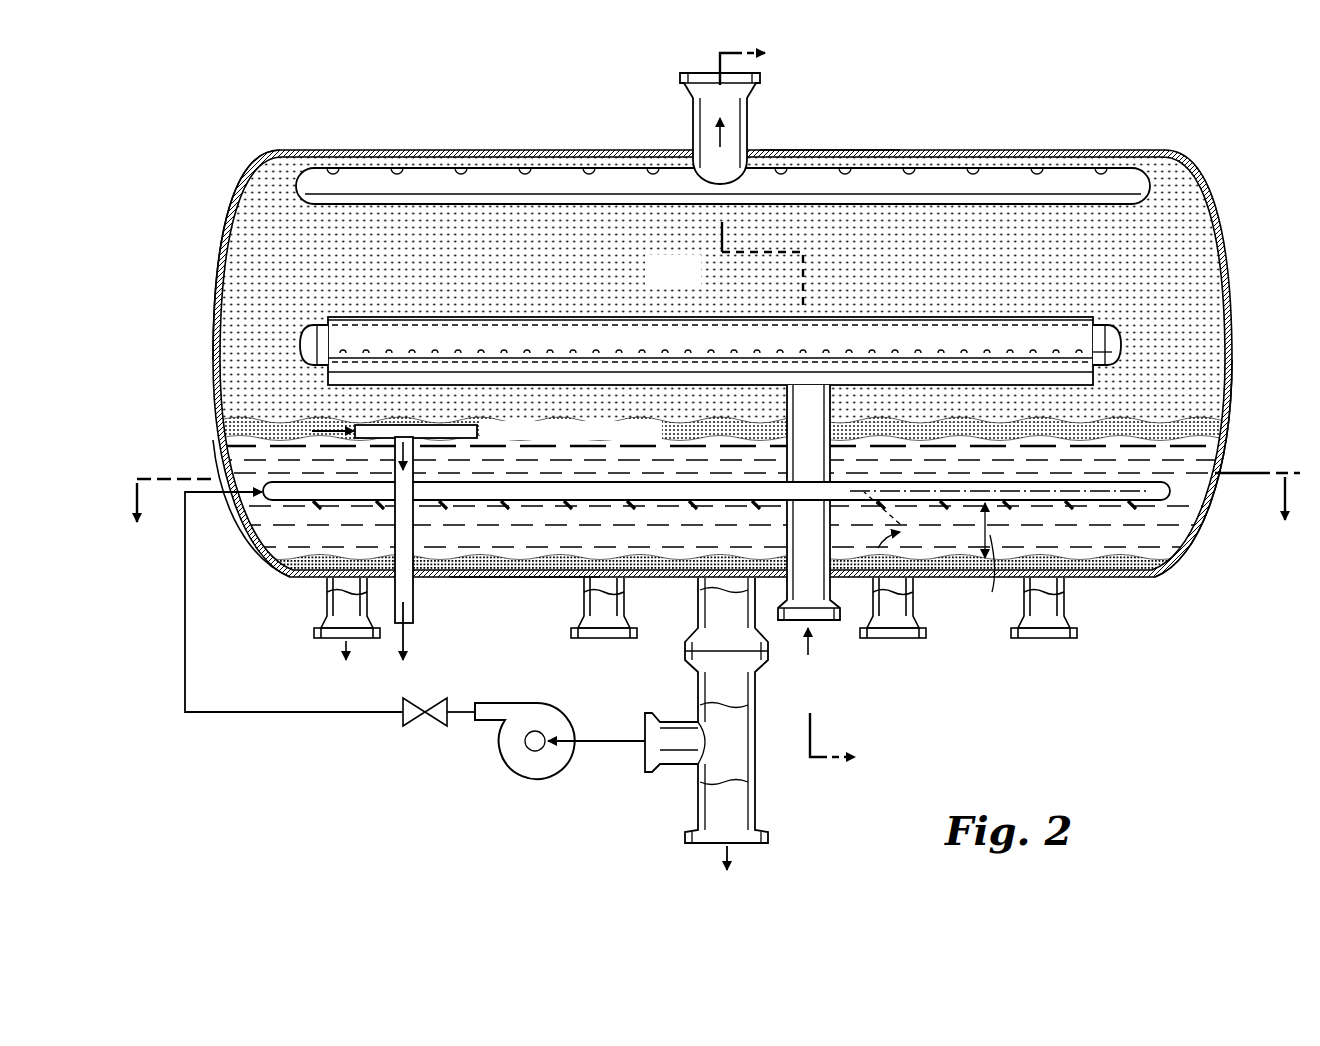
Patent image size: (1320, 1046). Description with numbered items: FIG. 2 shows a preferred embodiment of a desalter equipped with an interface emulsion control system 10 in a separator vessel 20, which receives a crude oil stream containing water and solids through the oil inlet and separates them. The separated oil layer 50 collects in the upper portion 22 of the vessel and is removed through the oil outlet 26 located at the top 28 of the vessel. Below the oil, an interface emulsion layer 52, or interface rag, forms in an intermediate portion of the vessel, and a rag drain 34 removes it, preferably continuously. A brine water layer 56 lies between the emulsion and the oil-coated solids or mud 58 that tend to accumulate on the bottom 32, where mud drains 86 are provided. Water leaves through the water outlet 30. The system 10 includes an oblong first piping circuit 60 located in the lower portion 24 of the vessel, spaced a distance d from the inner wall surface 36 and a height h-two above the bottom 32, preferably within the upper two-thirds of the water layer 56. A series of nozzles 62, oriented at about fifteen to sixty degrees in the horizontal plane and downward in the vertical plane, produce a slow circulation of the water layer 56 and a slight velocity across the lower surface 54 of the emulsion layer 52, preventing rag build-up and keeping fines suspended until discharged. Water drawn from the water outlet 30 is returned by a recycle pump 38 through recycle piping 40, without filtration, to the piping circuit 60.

The interface emulsion control system 10 is at (706, 467).
The separator vessel 20 is at (402, 142).
The upper portion of vessel 22 is at (238, 202).
The lower portion of vessel 24 is at (1207, 513).
The oil outlet 26 is at (693, 112).
The top of vessel 28 is at (795, 150).
The water outlet 30 is at (697, 615).
The bottom of vessel 32 is at (946, 565).
The rag drain 34 is at (414, 602).
The inner wall surface of vessel 36 is at (260, 563).
The recycle pump 38 is at (510, 757).
The recycle piping 40 is at (183, 594).
The oil layer 50 is at (1103, 222).
The interface emulsion layer 52 is at (1186, 423).
The lower surface of interface emulsion layer 54 is at (1212, 438).
The water layer 56 is at (1073, 537).
The oil-coated solids/mud 58 is at (518, 579).
The first piping circuit 60 is at (716, 517).
The nozzle 62 is at (655, 522).
The mud drain 86 is at (338, 603).